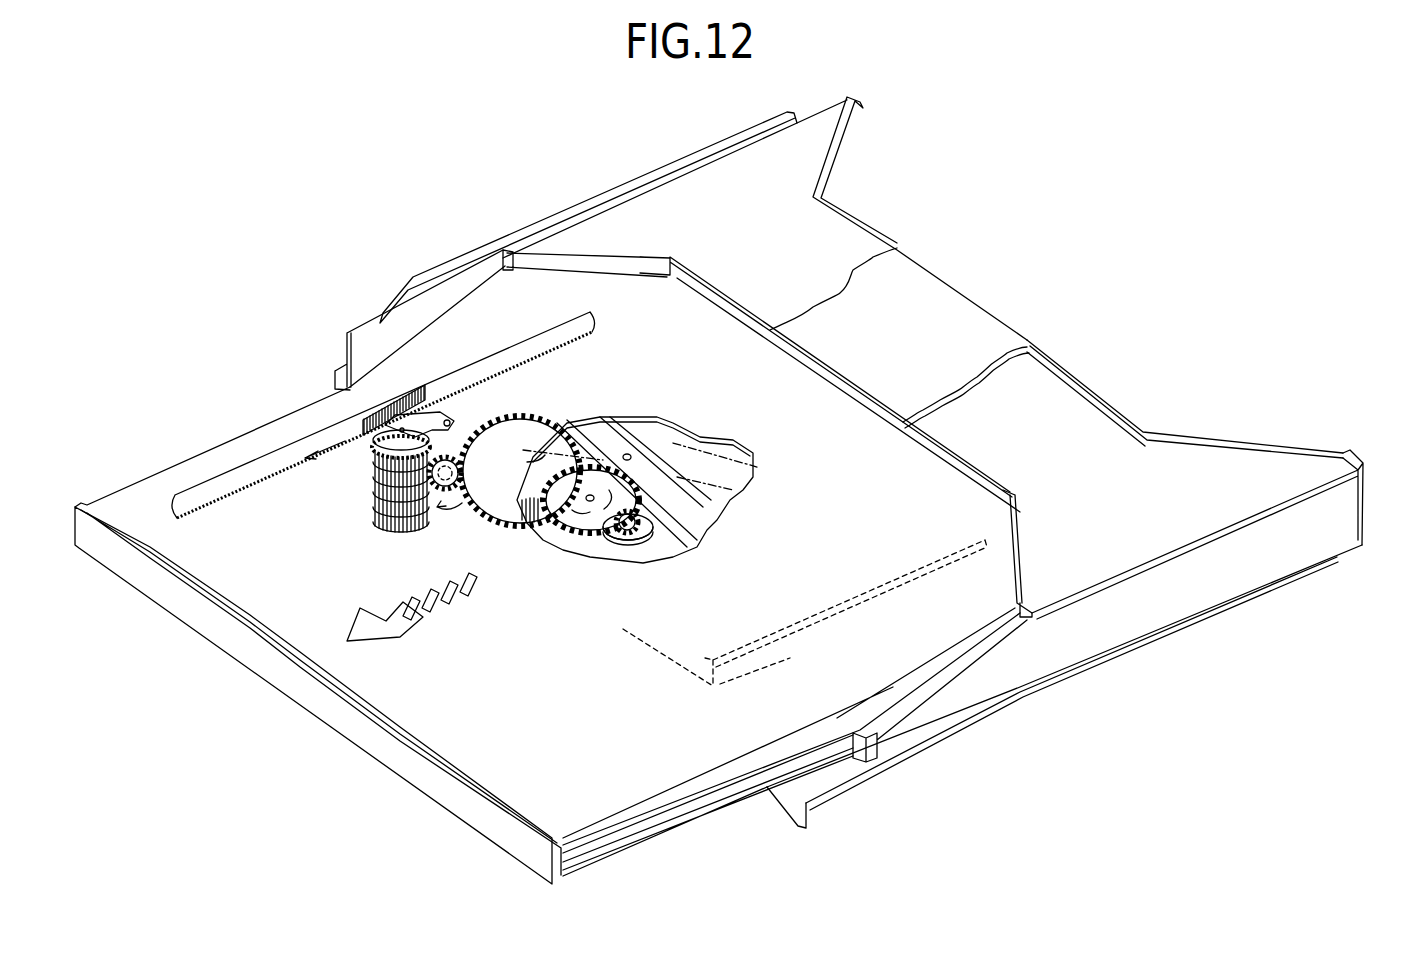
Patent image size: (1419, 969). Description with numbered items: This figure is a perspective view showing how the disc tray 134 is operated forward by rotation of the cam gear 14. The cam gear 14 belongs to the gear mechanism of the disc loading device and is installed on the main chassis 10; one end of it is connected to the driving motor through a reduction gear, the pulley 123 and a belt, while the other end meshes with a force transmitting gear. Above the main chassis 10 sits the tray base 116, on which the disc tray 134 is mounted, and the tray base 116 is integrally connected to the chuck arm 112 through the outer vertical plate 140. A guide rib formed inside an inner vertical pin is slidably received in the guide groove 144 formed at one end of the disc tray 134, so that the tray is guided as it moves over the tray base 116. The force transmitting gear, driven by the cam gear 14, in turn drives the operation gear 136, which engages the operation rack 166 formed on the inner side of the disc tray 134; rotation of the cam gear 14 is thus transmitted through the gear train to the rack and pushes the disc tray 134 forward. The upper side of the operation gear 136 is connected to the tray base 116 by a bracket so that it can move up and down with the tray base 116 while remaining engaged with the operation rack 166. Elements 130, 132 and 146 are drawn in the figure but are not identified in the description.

The main chassis 10 is at (363, 347).
The cam gear 14 is at (533, 432).
The chuck arm 112 is at (1063, 420).
The tray base 116 is at (845, 768).
The pulley 123 is at (627, 544).
The cutout plate 130 is at (720, 522).
The bar 132 is at (442, 268).
The disc tray 134 is at (415, 706).
The operation gear 136 is at (367, 472).
The outer vertical plate 140 is at (1320, 535).
The guide groove 144 is at (735, 787).
The plate 146 is at (923, 310).
The operation rack 166 is at (365, 416).